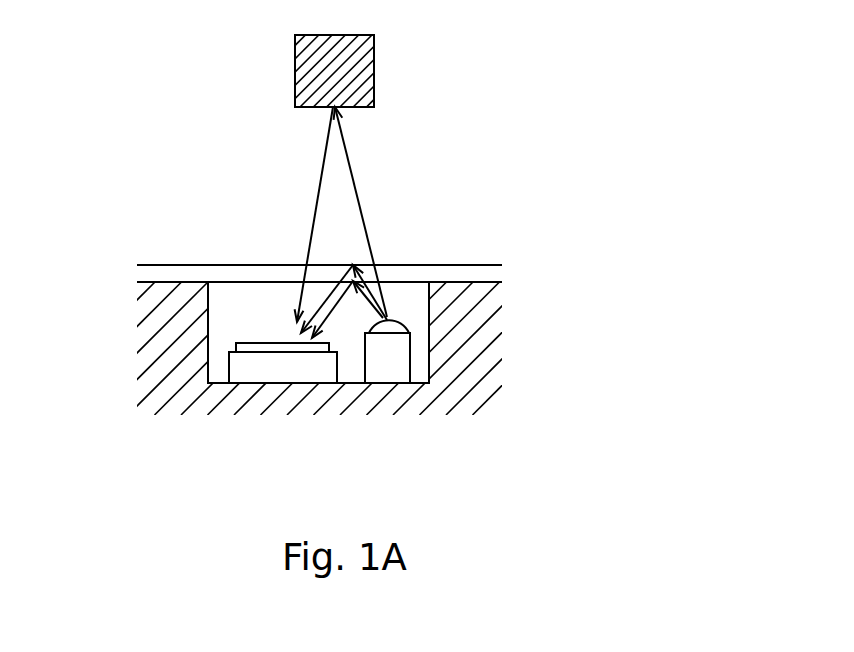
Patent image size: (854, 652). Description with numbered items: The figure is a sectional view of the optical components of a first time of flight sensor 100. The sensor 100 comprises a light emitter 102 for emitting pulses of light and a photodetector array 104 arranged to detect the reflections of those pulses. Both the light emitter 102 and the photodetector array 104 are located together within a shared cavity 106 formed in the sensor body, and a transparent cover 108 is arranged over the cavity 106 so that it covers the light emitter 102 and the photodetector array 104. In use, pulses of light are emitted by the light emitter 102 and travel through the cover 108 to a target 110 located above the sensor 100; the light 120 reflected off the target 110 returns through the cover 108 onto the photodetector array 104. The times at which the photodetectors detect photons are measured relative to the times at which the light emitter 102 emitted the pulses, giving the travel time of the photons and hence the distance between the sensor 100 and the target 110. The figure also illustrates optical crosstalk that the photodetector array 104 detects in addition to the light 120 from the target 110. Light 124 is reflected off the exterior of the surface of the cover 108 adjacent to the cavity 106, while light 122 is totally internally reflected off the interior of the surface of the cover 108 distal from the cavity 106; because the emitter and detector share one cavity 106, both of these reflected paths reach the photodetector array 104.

The time of flight sensor 100 is at (128, 133).
The light emitter 102 is at (390, 357).
The photodetector array 104 is at (250, 370).
The shared cavity 106 is at (245, 298).
The transparent cover 108 is at (488, 273).
The target 110 is at (377, 70).
The light 120 is at (352, 158).
The light 122 is at (377, 293).
The light 124 is at (328, 278).